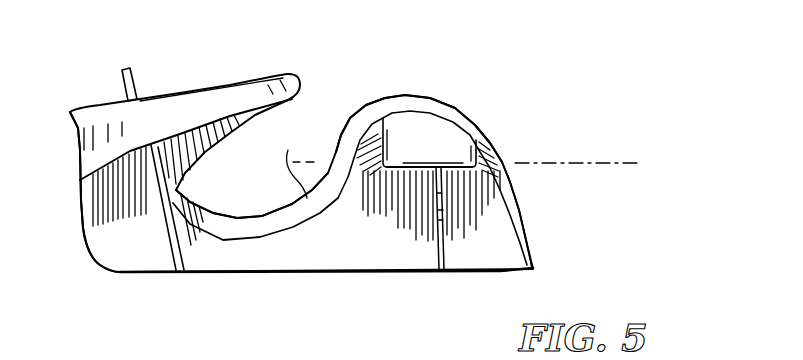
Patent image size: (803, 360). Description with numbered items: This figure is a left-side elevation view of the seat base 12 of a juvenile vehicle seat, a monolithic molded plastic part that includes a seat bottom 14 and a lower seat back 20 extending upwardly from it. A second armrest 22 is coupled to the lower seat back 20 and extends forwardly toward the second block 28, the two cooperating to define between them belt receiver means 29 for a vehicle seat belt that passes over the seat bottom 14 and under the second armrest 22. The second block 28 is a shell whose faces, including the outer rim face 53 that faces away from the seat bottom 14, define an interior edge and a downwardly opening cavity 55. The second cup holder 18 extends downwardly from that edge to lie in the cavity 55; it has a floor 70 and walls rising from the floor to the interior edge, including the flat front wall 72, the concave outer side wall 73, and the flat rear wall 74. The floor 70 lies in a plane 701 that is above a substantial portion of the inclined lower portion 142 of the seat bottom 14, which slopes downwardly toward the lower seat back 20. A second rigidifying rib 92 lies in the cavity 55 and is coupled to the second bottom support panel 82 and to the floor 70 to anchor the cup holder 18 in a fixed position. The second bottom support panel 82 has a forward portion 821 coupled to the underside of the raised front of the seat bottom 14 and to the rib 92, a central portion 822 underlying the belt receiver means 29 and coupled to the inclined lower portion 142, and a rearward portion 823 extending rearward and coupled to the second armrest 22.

The seat base 12 is at (546, 98).
The seat bottom 14 is at (251, 208).
The second cup holder 18 is at (450, 139).
The lower seat back 20 is at (183, 201).
The second armrest 22 is at (208, 82).
The second block 28 is at (480, 108).
The belt receiver means 29 is at (237, 152).
The outer rim face 53 is at (417, 82).
The downwardly opening cavity 55 is at (362, 173).
The floor 70 is at (420, 169).
The front wall 72 is at (498, 147).
The outer side wall 73 is at (423, 127).
The rear wall 74 is at (380, 137).
The second bottom support panel 82 is at (320, 248).
The second rigidifying rib 92 is at (505, 212).
The inclined lower portion 142 is at (302, 160).
The plane 701 is at (617, 163).
The forward portion 821 is at (455, 207).
The central portion 822 is at (247, 255).
The rearward portion 823 is at (107, 231).